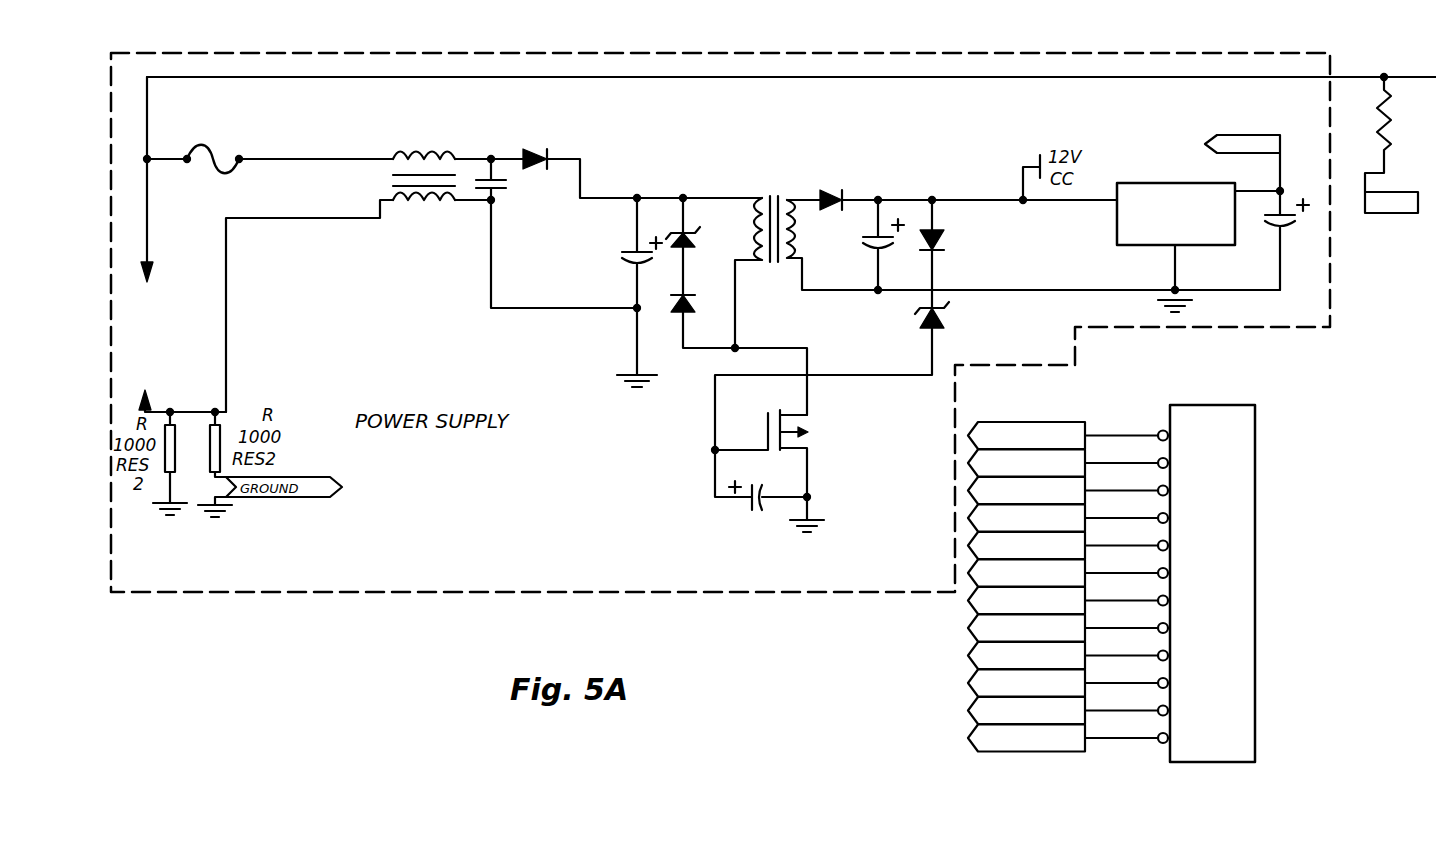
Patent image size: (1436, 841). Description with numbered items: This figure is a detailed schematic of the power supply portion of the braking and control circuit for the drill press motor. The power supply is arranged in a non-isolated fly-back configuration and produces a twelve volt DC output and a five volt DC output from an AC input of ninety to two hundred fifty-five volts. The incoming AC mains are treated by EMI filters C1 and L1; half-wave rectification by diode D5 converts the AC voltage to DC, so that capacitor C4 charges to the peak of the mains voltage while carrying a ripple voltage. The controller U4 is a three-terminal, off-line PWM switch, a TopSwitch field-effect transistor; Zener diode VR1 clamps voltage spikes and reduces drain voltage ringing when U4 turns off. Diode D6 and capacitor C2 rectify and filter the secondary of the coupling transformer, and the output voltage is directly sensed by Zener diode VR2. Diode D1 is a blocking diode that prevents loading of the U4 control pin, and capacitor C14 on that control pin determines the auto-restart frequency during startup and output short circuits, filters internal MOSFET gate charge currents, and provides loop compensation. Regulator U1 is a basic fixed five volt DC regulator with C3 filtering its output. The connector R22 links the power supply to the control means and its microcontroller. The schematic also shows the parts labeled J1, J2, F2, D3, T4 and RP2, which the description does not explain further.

The input connector J1 is at (153, 299).
The input connector J2 is at (176, 377).
The fuse F2 is at (209, 156).
The EMI filter L1 is at (358, 251).
The EMI filter capacitor C1 is at (556, 232).
The diode D5 is at (626, 155).
The capacitor C4 is at (611, 291).
The Zener diode VR1 is at (700, 245).
The diode D3 is at (739, 355).
The transformer T4 is at (1007, 261).
The diode D6 is at (952, 171).
The capacitor C2 is at (863, 245).
The blocking diode D1 is at (980, 253).
The Zener diode VR2 is at (868, 397).
The regulator U1 is at (1191, 226).
The capacitor C3 is at (1257, 202).
The connector R22 is at (1379, 144).
The controller U4 is at (766, 426).
The capacitor C14 is at (744, 509).
The header connector RP2 is at (1150, 583).